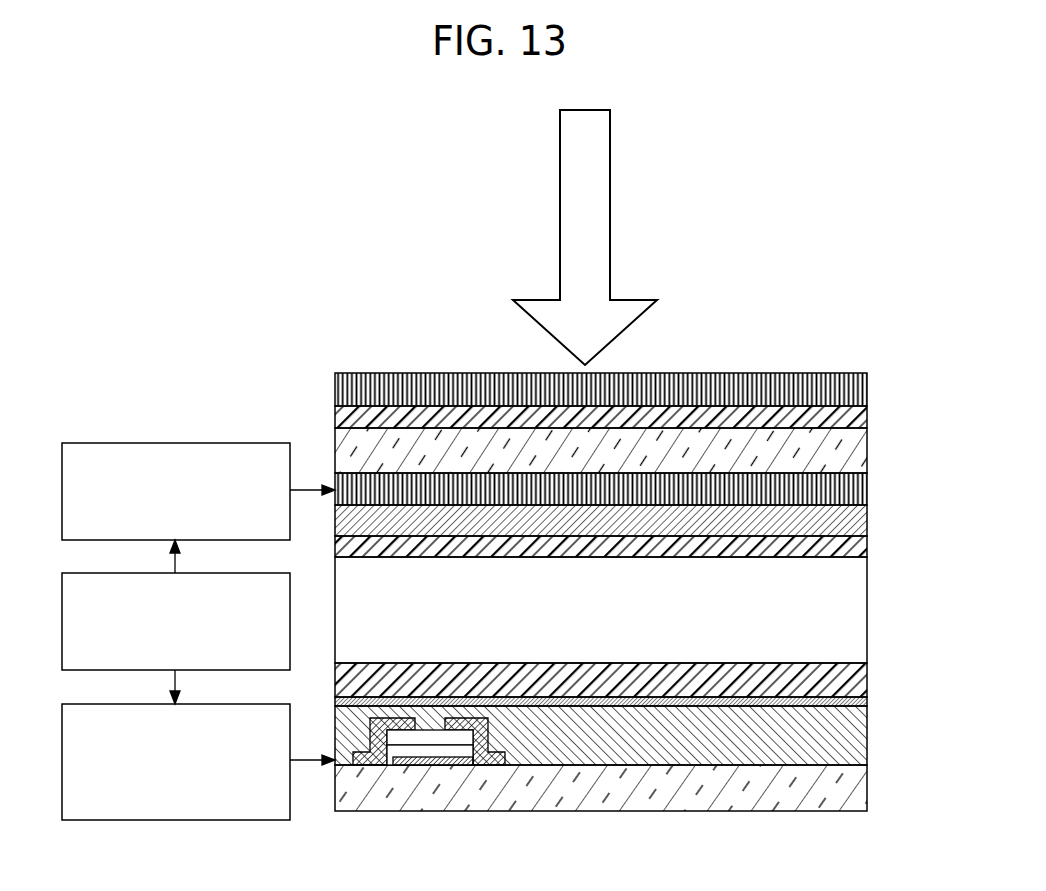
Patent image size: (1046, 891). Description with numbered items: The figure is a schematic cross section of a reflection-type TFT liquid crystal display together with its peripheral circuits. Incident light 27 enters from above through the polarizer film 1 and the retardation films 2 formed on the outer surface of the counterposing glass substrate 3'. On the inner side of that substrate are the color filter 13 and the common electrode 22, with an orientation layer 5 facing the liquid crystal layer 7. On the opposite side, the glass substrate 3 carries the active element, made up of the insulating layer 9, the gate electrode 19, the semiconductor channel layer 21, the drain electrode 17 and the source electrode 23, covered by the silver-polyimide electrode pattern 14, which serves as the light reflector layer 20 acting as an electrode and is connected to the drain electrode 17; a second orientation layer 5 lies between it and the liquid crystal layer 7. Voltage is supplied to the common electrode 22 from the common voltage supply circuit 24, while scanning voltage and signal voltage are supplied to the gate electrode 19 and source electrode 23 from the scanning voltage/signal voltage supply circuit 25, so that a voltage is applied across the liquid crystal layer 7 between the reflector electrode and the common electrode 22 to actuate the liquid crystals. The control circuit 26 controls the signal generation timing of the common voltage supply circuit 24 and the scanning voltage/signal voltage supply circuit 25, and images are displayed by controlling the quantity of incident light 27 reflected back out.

The polarizer film 1 is at (868, 380).
The retardation film 2 is at (868, 412).
The counterposing glass substrate 3' is at (632, 450).
The color filter 13 is at (868, 480).
The common electrode 22 is at (868, 512).
The orientation layer 5 is at (868, 547).
The liquid crystal layer 7 is at (868, 605).
The light reflector layer 20 is at (868, 703).
The electrode pattern 14 is at (868, 737).
The glass substrate 3 is at (628, 788).
The source electrode 23 is at (369, 767).
The insulating layer 9 is at (393, 767).
The gate electrode 19 is at (437, 767).
The semiconductor layer 21 is at (465, 733).
The drain electrode 17 is at (502, 767).
The common voltage supply circuit 24 is at (136, 444).
The scanning voltage/signal voltage supply circuit 25 is at (136, 704).
The control circuit 26 is at (136, 572).
The incident light 27 is at (598, 204).